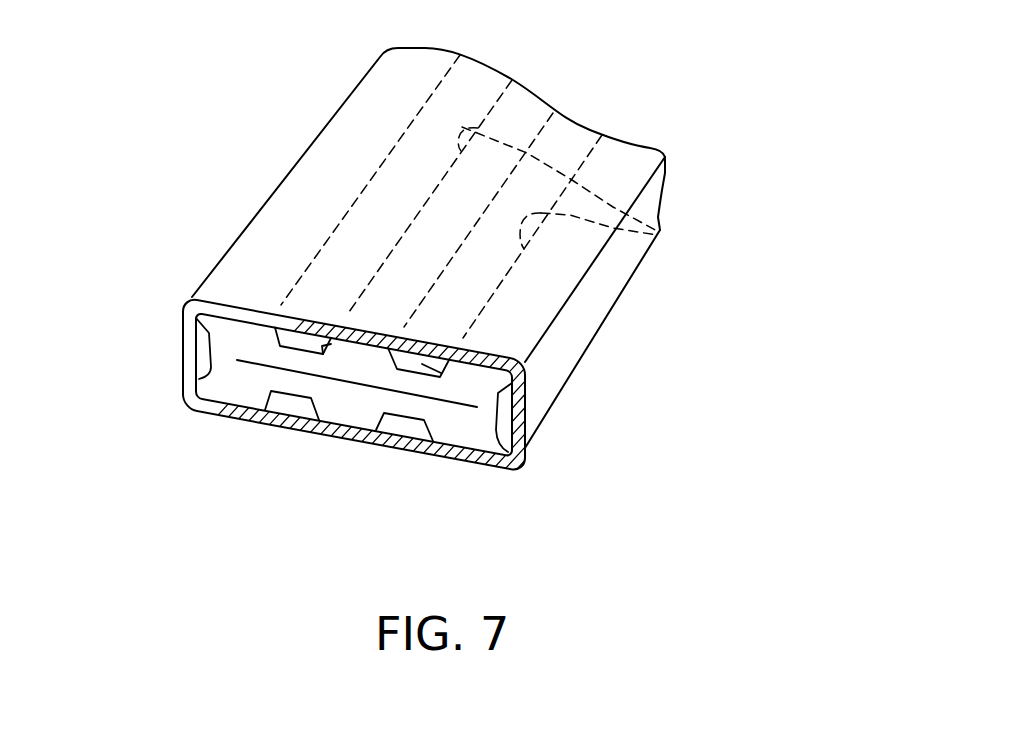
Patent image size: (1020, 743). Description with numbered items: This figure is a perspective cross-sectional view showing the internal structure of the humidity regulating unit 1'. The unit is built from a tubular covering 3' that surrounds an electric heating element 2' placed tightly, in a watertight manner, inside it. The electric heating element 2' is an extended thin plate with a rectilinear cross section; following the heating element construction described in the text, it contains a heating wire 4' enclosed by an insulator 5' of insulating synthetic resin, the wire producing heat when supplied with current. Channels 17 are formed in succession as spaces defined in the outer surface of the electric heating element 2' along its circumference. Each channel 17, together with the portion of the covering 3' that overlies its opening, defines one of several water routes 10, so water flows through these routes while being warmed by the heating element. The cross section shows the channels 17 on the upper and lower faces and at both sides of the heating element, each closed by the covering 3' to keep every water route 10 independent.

The humidity regulating unit 1' is at (409, 277).
The covering 3' is at (428, 248).
The electric heating element 2' is at (455, 406).
The upper housing part 5' is at (211, 399).
The lower housing part 4' is at (357, 420).
The water route 10 is at (332, 345).
The channel 17 is at (657, 236).